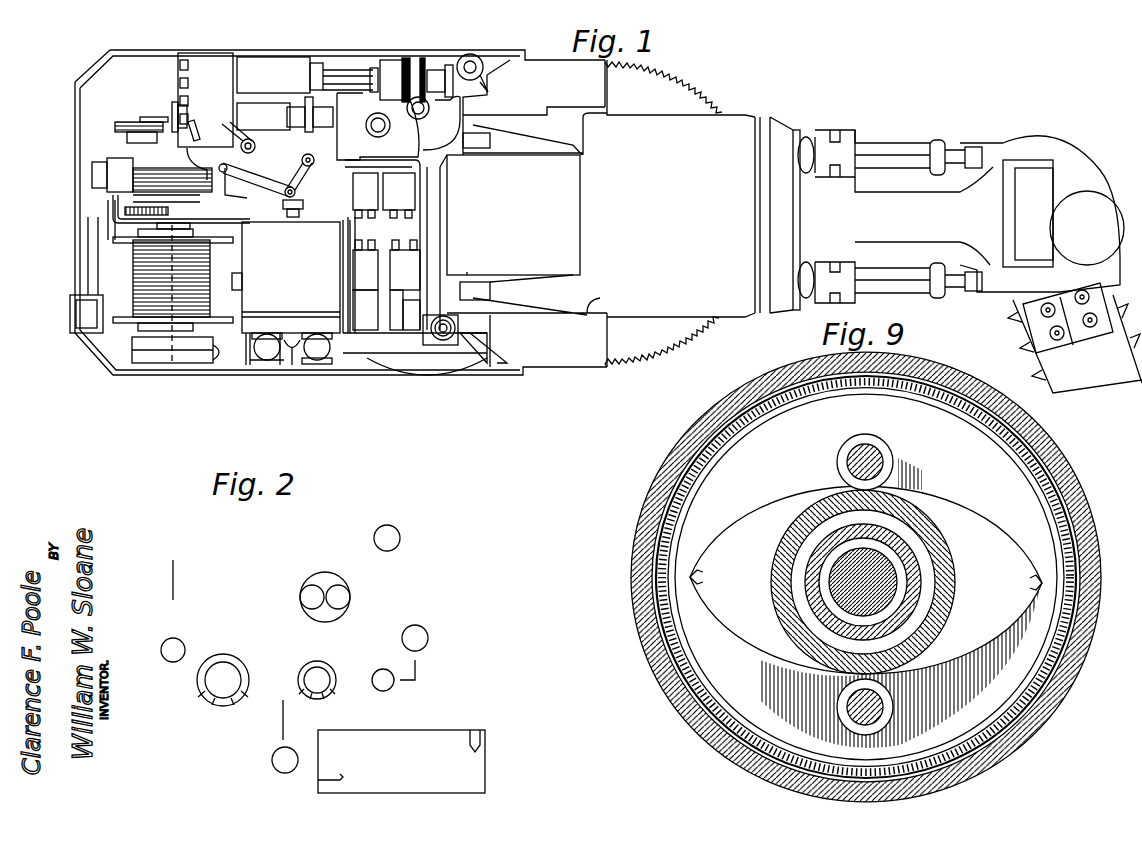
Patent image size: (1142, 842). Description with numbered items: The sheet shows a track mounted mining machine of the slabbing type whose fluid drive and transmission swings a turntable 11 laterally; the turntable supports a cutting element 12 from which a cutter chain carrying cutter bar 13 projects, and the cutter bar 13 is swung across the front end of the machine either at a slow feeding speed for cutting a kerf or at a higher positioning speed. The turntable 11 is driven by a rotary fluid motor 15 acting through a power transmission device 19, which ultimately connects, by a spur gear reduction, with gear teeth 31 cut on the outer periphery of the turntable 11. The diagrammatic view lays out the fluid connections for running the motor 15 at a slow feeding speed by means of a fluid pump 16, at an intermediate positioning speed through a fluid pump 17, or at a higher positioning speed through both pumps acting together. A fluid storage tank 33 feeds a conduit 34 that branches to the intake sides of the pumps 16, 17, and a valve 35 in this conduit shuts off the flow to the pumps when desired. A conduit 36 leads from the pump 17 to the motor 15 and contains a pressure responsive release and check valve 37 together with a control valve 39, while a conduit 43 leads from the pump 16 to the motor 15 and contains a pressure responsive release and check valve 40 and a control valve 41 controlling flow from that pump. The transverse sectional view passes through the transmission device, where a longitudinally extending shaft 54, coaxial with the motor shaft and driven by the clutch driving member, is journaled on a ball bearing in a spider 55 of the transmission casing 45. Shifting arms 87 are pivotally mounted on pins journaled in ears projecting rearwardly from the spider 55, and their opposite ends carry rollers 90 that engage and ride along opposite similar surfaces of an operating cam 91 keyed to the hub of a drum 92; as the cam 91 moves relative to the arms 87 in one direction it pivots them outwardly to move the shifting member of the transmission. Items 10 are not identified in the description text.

In FIG. 1, the mining machine housing 10 is at (340, 373).
In FIG. 1, the turntable 11 is at (665, 360).
In FIG. 1, the cutting element 12 is at (785, 120).
In FIG. 1, the cutter bar 13 is at (1050, 392).
In FIG. 1, the fluid motor 15 is at (437, 70).
In FIG. 2, the fluid motor 15 is at (300, 597).
In FIG. 1, the fluid pump 16 is at (397, 62).
In FIG. 2, the fluid pump 16 is at (322, 662).
In FIG. 2, the fluid pump 17 is at (256, 655).
In FIG. 1, the power transmission device 19 is at (370, 106).
In FIG. 1, the gear teeth 31 is at (702, 350).
In FIG. 2, the fluid storage tank 33 is at (487, 772).
In FIG. 2, the conduit 34 is at (281, 724).
In FIG. 2, the valve 35 is at (272, 766).
In FIG. 2, the conduit 36 is at (170, 605).
In FIG. 2, the pressure responsive release and check valve 37 is at (180, 640).
In FIG. 2, the control valve 39 is at (400, 538).
In FIG. 2, the pressure responsive release and check valve 40 is at (383, 691).
In FIG. 2, the control valve 41 is at (452, 622).
In FIG. 2, the conduit 43 is at (420, 680).
In FIG. 9, the casing 45 is at (660, 670).
In FIG. 9, the shaft 54 is at (897, 567).
In FIG. 9, the spider 55 is at (900, 527).
In FIG. 9, the shifting arms 87 is at (870, 455).
In FIG. 9, the rollers 90 is at (890, 448).
In FIG. 9, the operating cam 91 is at (973, 513).
In FIG. 9, the drum 92 is at (1045, 527).